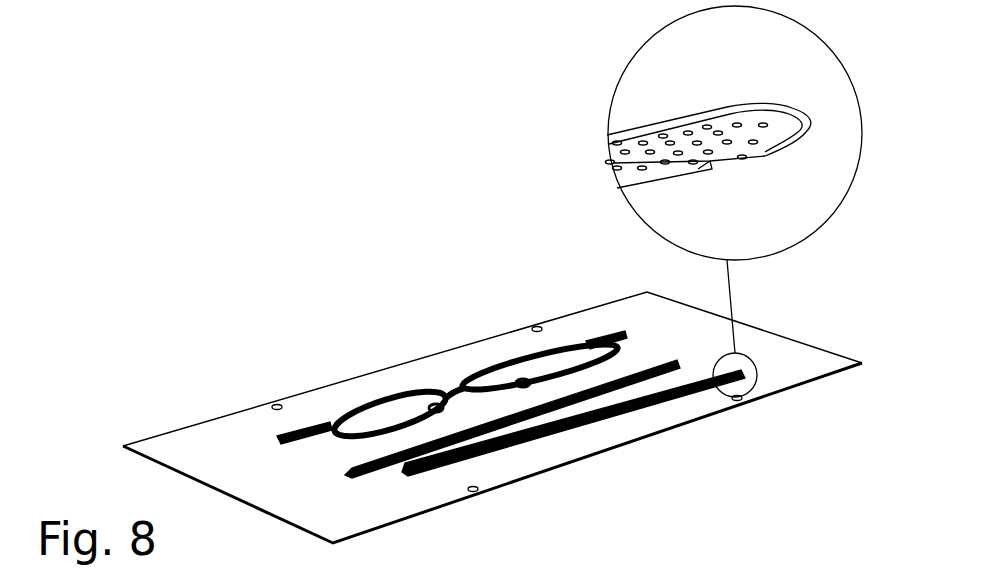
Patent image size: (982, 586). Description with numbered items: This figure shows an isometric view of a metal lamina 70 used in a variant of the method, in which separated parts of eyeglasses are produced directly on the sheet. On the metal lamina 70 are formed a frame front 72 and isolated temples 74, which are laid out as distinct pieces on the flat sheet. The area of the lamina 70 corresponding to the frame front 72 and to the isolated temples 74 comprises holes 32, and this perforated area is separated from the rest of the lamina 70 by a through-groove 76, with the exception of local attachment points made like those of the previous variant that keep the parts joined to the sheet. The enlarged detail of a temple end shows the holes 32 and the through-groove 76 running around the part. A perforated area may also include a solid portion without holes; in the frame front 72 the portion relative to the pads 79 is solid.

The metal lamina 70 is at (217, 427).
The frame front 72 is at (397, 390).
The isolated temples 74 is at (630, 387).
The through-groove 76 is at (668, 112).
The pads 79 is at (442, 403).
The holes 32 is at (716, 138).